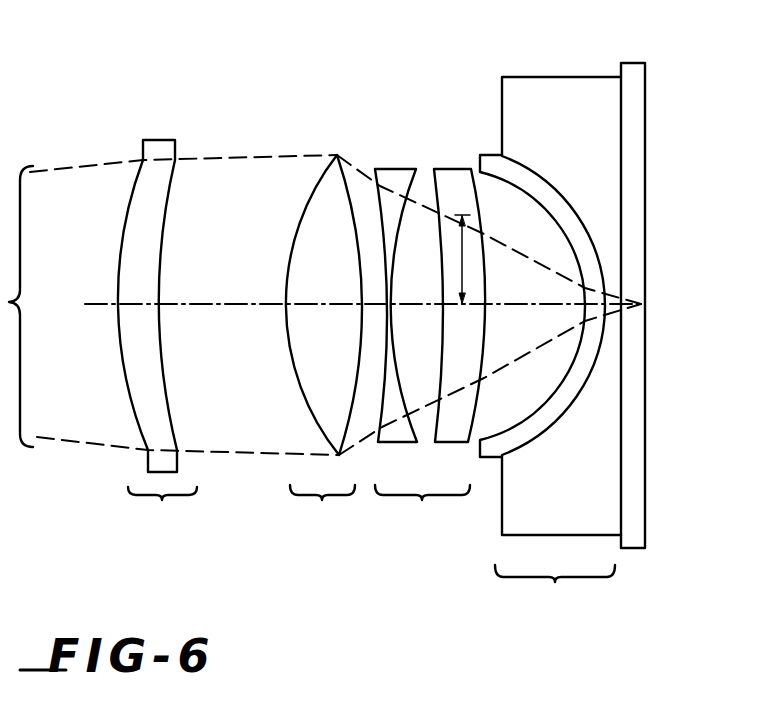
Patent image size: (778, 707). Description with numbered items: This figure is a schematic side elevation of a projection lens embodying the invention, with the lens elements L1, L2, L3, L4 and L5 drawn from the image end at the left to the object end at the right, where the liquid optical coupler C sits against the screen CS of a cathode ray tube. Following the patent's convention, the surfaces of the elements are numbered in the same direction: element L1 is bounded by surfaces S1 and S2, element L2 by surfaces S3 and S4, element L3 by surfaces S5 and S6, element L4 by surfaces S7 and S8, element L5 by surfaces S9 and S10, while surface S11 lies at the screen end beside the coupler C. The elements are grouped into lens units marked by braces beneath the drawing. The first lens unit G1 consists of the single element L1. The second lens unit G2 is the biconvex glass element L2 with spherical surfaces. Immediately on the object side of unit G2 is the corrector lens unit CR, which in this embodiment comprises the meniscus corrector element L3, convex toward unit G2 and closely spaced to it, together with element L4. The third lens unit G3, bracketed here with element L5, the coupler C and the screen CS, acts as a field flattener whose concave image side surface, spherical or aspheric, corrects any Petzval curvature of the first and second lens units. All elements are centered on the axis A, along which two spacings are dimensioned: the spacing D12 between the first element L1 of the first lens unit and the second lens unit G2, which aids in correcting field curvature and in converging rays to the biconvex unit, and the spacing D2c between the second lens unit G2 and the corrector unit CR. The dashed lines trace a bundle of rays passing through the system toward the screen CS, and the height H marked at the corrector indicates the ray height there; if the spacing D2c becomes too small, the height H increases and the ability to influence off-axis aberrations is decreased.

The first lens element L1 is at (170, 138).
The second lens element L2 is at (337, 155).
The third lens element L3 is at (395, 169).
The fourth lens element L4 is at (453, 169).
The fifth lens element L5 is at (494, 155).
The liquid optical coupler C is at (558, 75).
The screen of cathode ray tube CS is at (665, 48).
The first lens surface S1 is at (132, 395).
The second lens surface S2 is at (177, 417).
The third lens surface S3 is at (292, 376).
The fourth lens surface S4 is at (343, 422).
The fifth lens surface S5 is at (368, 372).
The sixth lens surface S6 is at (392, 328).
The seventh lens surface S7 is at (443, 345).
The eighth lens surface S8 is at (482, 343).
The ninth lens surface S9 is at (558, 219).
The tenth lens surface S10 is at (597, 256).
The eleventh surface S11 is at (648, 184).
The optical axis A is at (108, 304).
The spacing between first element and second lens unit D12 is at (222, 294).
The spacing between second lens unit and corrector unit D2c is at (417, 294).
The ray height H is at (462, 259).
The first lens unit G1 is at (162, 510).
The second lens unit G2 is at (322, 508).
The corrector lens unit CR is at (422, 507).
The third lens unit G3 is at (555, 592).